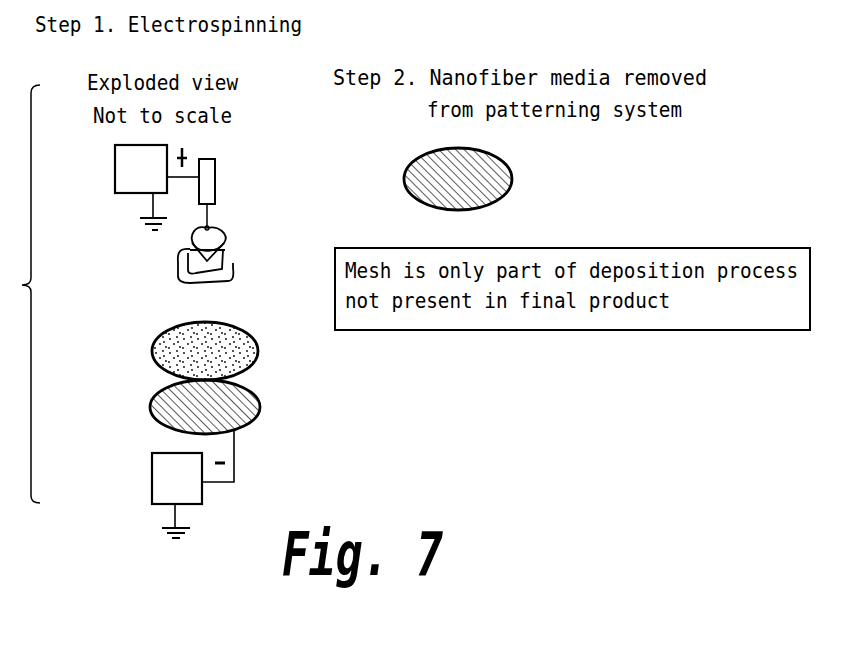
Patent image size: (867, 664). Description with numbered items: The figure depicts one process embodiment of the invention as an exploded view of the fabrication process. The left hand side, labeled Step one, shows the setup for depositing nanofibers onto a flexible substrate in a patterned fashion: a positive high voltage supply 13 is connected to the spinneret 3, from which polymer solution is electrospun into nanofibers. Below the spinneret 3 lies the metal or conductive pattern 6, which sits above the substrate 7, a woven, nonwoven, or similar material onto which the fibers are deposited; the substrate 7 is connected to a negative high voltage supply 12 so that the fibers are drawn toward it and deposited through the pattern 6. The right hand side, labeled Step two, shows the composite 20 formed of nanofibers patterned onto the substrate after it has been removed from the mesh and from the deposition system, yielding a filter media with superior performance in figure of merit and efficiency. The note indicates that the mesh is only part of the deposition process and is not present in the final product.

The positive high voltage supply 13 is at (115, 170).
The spinneret 3 is at (215, 187).
The metal or conductive pattern 6 is at (152, 340).
The substrate 7 is at (150, 405).
The negative high voltage supply 12 is at (152, 478).
The composite formed of nanofibers patterned onto substrate 20 is at (403, 180).